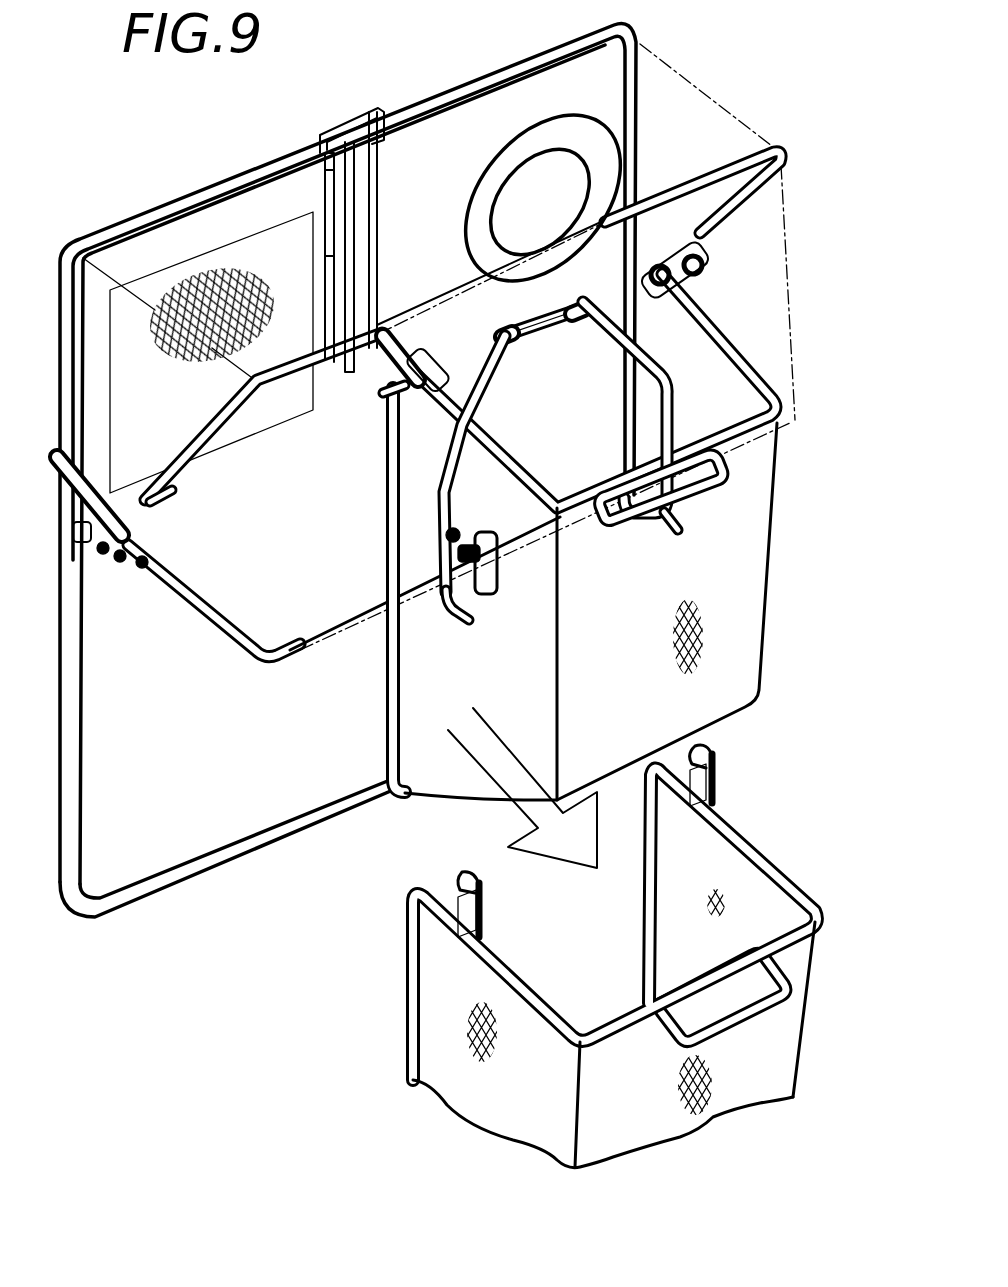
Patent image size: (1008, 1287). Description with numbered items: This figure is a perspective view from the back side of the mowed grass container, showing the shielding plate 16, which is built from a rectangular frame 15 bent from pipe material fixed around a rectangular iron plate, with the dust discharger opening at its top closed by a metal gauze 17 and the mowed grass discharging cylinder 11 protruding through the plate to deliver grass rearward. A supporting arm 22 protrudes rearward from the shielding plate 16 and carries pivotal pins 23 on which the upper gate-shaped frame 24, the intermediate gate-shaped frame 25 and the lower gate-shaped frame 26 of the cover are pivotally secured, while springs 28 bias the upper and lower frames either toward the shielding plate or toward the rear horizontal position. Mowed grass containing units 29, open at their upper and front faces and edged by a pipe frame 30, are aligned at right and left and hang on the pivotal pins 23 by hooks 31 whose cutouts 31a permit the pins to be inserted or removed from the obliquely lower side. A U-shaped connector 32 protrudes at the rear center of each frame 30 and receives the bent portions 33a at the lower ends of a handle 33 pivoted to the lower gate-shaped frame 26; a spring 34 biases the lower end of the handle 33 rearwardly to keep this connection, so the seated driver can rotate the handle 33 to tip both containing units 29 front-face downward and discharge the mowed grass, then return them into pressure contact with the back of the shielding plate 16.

The mowed grass discharging cylinder 11 is at (540, 173).
The rectangular frame 15 is at (67, 620).
The shielding plate 16 is at (128, 870).
The metal gauze 17 is at (210, 277).
The supporting arm 22 is at (667, 233).
The pivotal pin 23 is at (653, 280).
The upper gate-shaped frame 24 is at (123, 228).
The intermediate gate-shaped frame 25 is at (723, 170).
The lower gate-shaped frame 26 is at (230, 640).
The spring 28 is at (510, 157).
The mowed grass containing unit 29 is at (790, 518).
The frame 30 is at (777, 873).
The hook 31 is at (697, 750).
The cutout 31a is at (690, 803).
The U-shaped connector 32 is at (703, 490).
The handle 33 is at (503, 353).
The bent portion 33a is at (450, 620).
The spring 34 is at (347, 120).